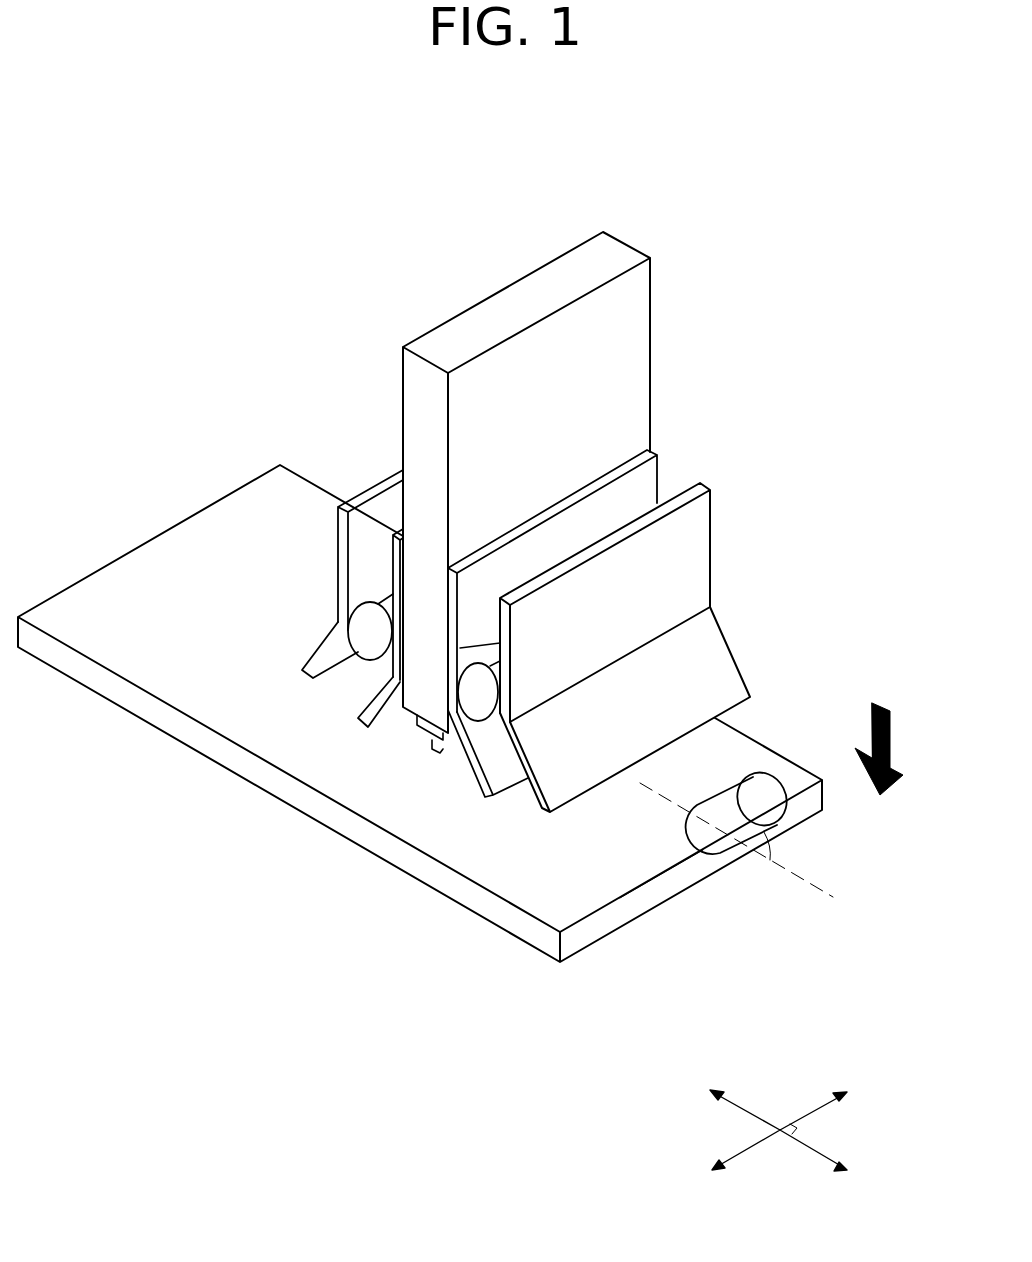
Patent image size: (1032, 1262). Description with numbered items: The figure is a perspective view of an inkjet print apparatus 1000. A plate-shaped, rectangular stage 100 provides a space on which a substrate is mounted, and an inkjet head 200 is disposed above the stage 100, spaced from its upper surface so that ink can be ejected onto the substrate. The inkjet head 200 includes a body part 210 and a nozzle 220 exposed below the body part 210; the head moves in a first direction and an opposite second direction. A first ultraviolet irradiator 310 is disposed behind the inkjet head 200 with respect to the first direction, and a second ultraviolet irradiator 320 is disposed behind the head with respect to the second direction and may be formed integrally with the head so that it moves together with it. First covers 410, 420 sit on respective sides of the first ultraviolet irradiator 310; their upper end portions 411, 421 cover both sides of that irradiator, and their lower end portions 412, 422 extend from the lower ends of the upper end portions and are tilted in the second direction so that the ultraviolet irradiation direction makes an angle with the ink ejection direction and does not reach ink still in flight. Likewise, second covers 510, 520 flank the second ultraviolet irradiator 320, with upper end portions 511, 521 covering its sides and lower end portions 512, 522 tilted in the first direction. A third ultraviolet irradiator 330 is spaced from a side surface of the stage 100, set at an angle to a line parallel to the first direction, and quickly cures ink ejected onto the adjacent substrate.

The inkjet print apparatus 1000 is at (442, 231).
The stage 100 is at (640, 900).
The inkjet head 200 is at (440, 598).
The body part 210 is at (420, 707).
The nozzle 220 is at (437, 743).
The first ultraviolet irradiator 310 is at (382, 600).
The second ultraviolet irradiator 320 is at (483, 688).
The third ultraviolet irradiator 330 is at (770, 793).
The first cover 410 is at (220, 661).
The upper end portion 411 is at (345, 602).
The lower end portion 412 is at (305, 665).
The first cover 420 is at (265, 717).
The upper end portion 421 is at (395, 615).
The lower end portion 422 is at (365, 726).
The second cover 510 is at (487, 733).
The upper end portion 511 is at (452, 735).
The lower end portion 512 is at (480, 780).
The second cover 520 is at (703, 647).
The upper end portion 521 is at (700, 553).
The lower end portion 522 is at (670, 709).